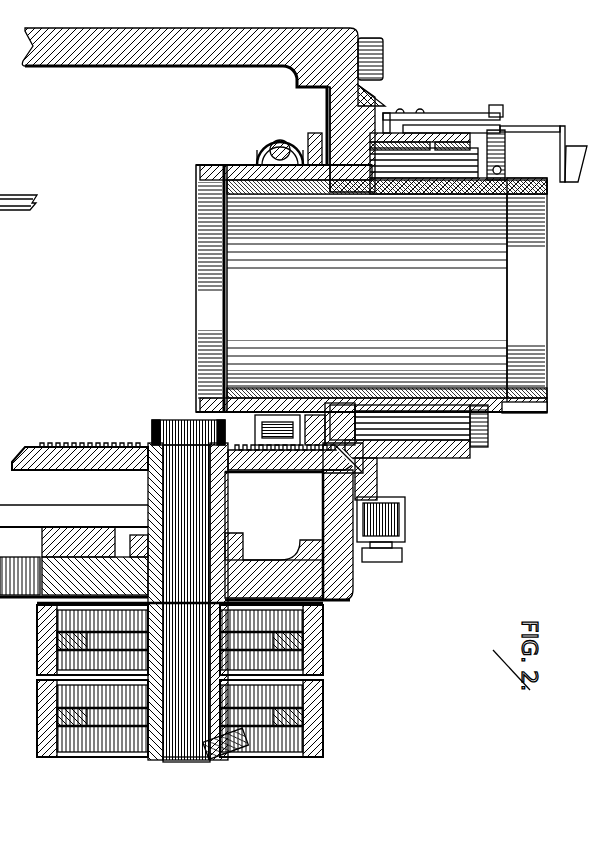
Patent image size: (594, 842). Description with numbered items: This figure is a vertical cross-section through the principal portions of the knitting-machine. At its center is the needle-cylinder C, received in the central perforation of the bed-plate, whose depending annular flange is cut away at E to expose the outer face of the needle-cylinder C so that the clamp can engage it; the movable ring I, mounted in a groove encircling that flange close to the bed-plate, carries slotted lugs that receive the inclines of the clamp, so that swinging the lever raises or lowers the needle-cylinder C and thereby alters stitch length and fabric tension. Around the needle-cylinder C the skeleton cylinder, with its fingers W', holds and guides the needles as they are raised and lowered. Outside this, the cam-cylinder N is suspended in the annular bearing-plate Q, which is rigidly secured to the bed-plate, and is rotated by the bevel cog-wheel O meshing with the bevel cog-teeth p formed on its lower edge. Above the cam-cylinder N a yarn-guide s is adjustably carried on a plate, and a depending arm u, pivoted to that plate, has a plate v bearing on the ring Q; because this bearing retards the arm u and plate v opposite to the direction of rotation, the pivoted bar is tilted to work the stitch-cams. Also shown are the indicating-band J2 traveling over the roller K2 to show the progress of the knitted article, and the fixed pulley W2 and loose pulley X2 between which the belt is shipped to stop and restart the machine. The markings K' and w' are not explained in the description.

The cut-away E is at (261, 150).
The movable ring I is at (279, 140).
The block K' is at (389, 290).
The fingers W' is at (387, 319).
The needle-cylinder C is at (371, 289).
The plate v is at (410, 112).
The depending arm u is at (455, 124).
The screw w' is at (490, 123).
The cam-cylinder n is at (532, 154).
The yarn-guide s is at (576, 152).
The bevel cog-wheel O is at (274, 516).
The bevel cog-teeth p is at (343, 466).
The annular bearing-plate Q is at (380, 497).
The cam-cylinder N is at (390, 479).
The indicating-band J2 is at (395, 548).
The roller K2 is at (403, 560).
The loose pulley X2 is at (189, 640).
The fixed pulley W2 is at (190, 719).